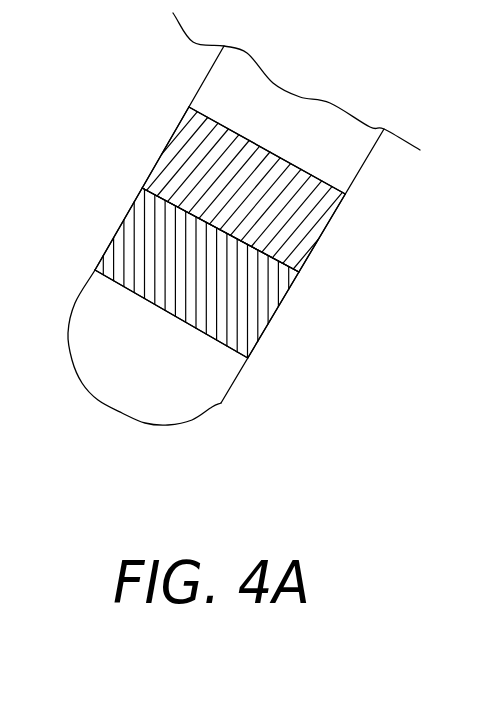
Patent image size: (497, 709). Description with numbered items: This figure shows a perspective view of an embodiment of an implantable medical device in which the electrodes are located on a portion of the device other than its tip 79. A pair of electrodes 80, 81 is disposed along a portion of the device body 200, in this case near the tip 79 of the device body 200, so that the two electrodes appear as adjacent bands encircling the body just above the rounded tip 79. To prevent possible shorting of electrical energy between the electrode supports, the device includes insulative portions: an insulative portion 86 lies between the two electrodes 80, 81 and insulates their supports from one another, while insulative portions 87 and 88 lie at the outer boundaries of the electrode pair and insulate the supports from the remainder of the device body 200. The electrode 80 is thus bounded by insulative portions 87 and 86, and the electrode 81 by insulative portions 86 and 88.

The device body 200 is at (343, 143).
The tip 79 is at (105, 411).
The electrode 80 is at (168, 144).
The electrode 81 is at (119, 231).
The insulative portion 86 is at (301, 273).
The insulative portion 87 is at (346, 195).
The insulative portion 88 is at (249, 359).